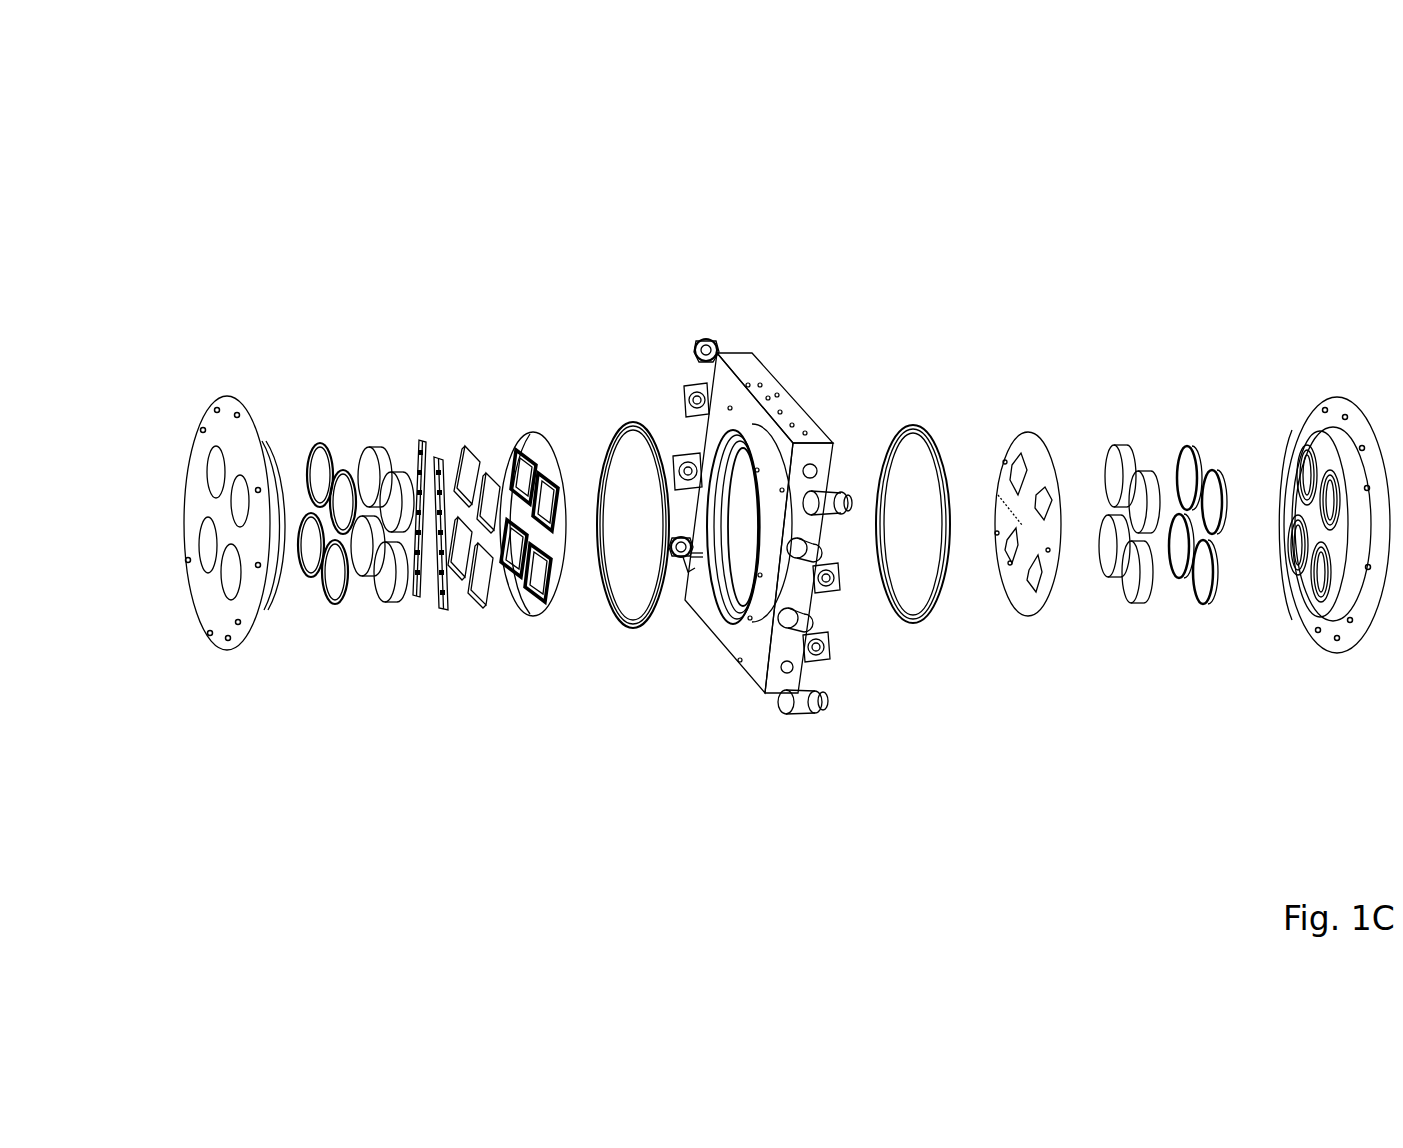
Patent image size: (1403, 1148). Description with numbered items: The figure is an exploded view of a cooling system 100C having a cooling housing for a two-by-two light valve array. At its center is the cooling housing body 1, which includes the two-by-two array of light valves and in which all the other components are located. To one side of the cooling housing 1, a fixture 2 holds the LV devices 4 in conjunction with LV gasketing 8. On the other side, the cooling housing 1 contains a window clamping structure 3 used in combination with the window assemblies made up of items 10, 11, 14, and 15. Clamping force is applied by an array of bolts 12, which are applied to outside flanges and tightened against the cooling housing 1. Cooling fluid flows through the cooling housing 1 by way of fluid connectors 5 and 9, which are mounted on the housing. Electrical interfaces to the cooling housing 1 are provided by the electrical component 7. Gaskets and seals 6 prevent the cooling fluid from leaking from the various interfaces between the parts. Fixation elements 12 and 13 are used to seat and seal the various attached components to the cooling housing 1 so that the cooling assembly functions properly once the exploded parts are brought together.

The cooling system 100C is at (325, 140).
The cooling housing body 1 is at (753, 446).
The fixture 2 is at (544, 621).
The window clamping structure 3 is at (1341, 656).
The LV devices 4 is at (484, 611).
The fluid connector 5 is at (830, 704).
The gaskets and seals 6 is at (786, 644).
The electrical component 7 is at (685, 454).
The LV gasketing 8 is at (421, 596).
The fluid connector 9 is at (677, 562).
The window assembly item 10 is at (1030, 616).
The window assembly item 11 is at (922, 629).
The bolts 12 is at (690, 573).
The fixation elements 13 is at (824, 601).
The window assembly item 14 is at (1113, 581).
The window assembly item 15 is at (1186, 581).